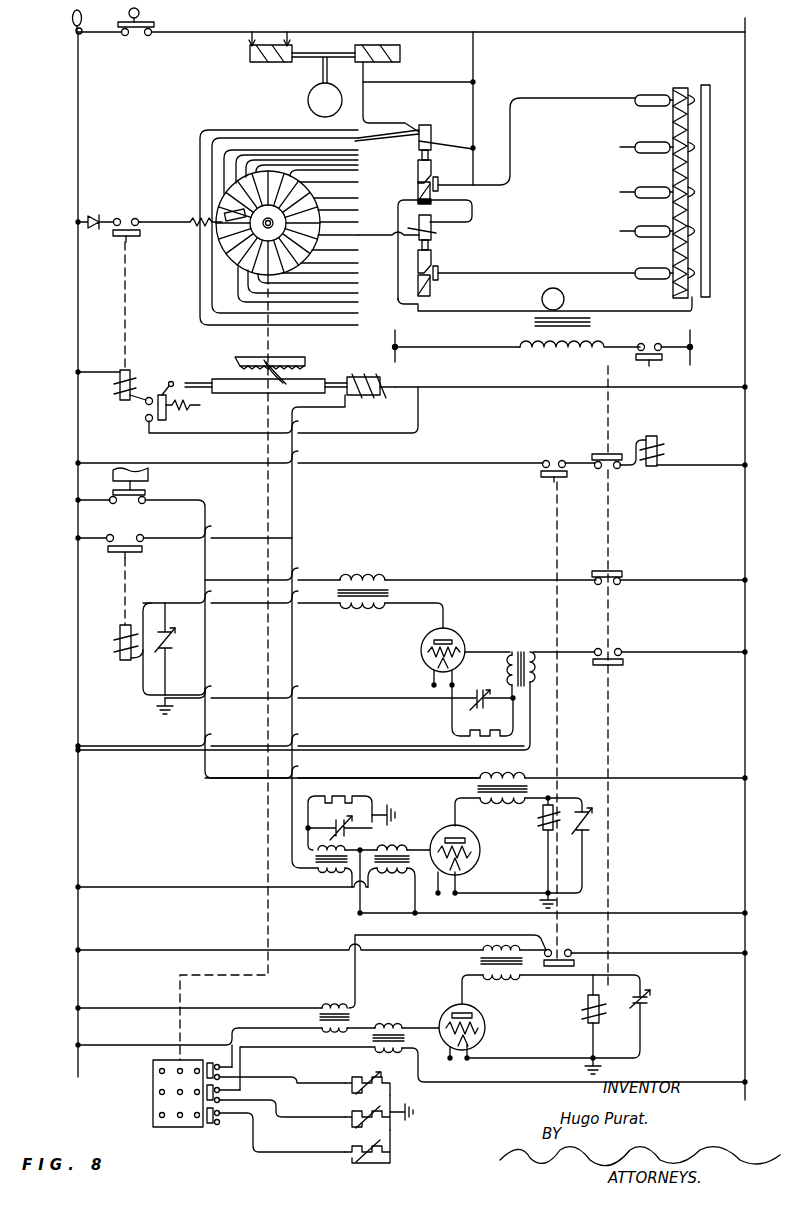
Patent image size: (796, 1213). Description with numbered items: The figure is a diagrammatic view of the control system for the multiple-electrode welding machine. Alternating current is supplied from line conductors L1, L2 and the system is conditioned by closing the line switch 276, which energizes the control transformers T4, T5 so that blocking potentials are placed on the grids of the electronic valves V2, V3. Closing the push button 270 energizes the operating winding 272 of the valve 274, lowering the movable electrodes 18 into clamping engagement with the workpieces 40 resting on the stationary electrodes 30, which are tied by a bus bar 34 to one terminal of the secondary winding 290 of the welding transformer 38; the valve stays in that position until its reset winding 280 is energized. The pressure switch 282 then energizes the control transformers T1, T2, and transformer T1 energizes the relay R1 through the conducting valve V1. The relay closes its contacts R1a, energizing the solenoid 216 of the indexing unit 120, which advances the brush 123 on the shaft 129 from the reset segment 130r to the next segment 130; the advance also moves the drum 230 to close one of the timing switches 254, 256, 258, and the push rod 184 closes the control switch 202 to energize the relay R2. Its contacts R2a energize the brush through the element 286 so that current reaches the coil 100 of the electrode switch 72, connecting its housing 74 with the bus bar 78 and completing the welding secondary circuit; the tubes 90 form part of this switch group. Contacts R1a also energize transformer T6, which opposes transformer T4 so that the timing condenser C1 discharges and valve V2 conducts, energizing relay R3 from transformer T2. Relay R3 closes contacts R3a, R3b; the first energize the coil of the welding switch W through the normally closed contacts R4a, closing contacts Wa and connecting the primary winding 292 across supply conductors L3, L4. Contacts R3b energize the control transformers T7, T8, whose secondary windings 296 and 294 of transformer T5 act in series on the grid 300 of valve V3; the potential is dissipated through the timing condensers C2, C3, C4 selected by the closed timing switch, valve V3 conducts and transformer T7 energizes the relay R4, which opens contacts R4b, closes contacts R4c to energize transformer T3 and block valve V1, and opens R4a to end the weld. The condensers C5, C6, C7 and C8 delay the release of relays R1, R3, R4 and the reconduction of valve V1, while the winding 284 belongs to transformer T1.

The line conductor L1 is at (78, 40).
The line conductor L2 is at (745, 22).
The supply conductor L3 is at (396, 340).
The supply conductor L4 is at (692, 340).
The line switch 276 is at (72, 17).
The push button 270 is at (134, 34).
The operating winding 272 is at (258, 44).
The reset winding 280 is at (401, 51).
The valve 274 is at (312, 104).
The shaft 129 is at (240, 185).
The indexing and control unit 120 is at (232, 196).
The segment 130 is at (224, 213).
The reset segment 130r is at (220, 216).
The brush 123 is at (215, 236).
The rectifier 286 is at (93, 218).
The relay contacts R2a is at (124, 240).
The coil 100 is at (415, 127).
The electrode switch 72 is at (434, 130).
The housing 74 is at (438, 178).
The bus bar 78 is at (431, 202).
The tube 90 is at (418, 187).
The welding electrode 18 is at (650, 95).
The stationary electrode 30 is at (692, 96).
The workpiece 40 is at (690, 170).
The bus bar 34 is at (710, 210).
The secondary winding 290 is at (564, 299).
The primary winding 292 is at (556, 352).
The welding transformer 38 is at (640, 343).
The welding switch contacts Wa is at (645, 362).
The control relay R2 is at (138, 380).
The push rod 184 is at (228, 392).
The control switch 202 is at (168, 416).
The solenoid 216 is at (364, 398).
The relay contacts R4a is at (606, 454).
The welding switch W is at (660, 454).
The pressure switch 282 is at (148, 476).
The relay contacts R3a is at (552, 480).
The relay contacts R1a is at (120, 534).
The relay contacts R4b is at (612, 578).
The control transformer T1 is at (356, 578).
The secondary winding 284 is at (354, 606).
The electronic valve V1 is at (464, 642).
The control transformer T3 is at (516, 652).
The relay contacts R4c is at (614, 665).
The control relay R1 is at (120, 655).
The timing condenser C5 is at (176, 640).
The condenser C8 is at (480, 688).
The control transformer T2 is at (496, 778).
The timing condenser C1 is at (360, 796).
The control transformer T4 is at (392, 848).
The electronic valve V2 is at (472, 850).
The control relay R3 is at (543, 818).
The condenser C6 is at (596, 826).
The control transformer T6 is at (322, 870).
The relay contacts R3b is at (562, 948).
The control transformer T7 is at (494, 948).
The control transformer T8 is at (330, 1006).
The secondary winding 296 is at (350, 1026).
The control transformer T5 is at (396, 1022).
The secondary winding 294 is at (404, 1010).
The grid 300 is at (475, 1016).
The electronic valve V3 is at (484, 1030).
The control relay R4 is at (588, 1012).
The condenser C7 is at (644, 994).
The drum 230 is at (152, 1078).
The timing switch 254 is at (228, 1070).
The timing switch 256 is at (207, 1096).
The timing switch 258 is at (230, 1126).
The timing condenser C2 is at (376, 1076).
The timing condenser C3 is at (380, 1106).
The timing condenser C4 is at (374, 1148).